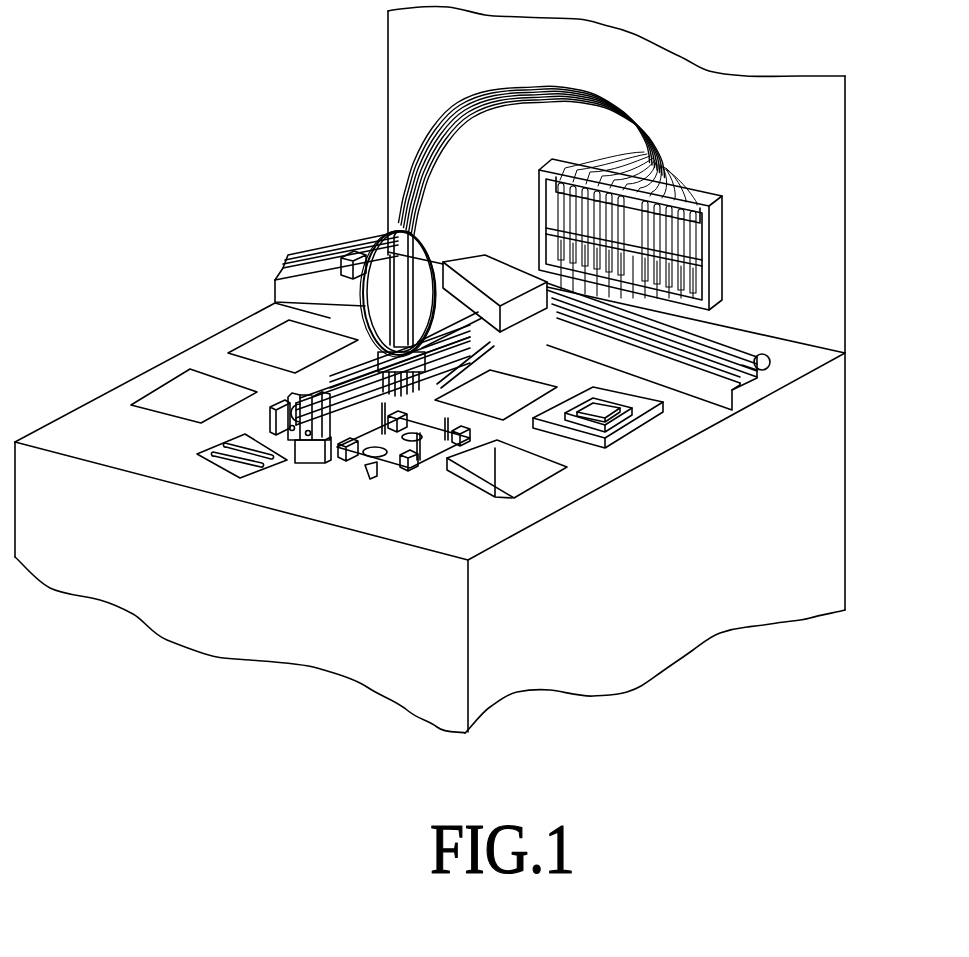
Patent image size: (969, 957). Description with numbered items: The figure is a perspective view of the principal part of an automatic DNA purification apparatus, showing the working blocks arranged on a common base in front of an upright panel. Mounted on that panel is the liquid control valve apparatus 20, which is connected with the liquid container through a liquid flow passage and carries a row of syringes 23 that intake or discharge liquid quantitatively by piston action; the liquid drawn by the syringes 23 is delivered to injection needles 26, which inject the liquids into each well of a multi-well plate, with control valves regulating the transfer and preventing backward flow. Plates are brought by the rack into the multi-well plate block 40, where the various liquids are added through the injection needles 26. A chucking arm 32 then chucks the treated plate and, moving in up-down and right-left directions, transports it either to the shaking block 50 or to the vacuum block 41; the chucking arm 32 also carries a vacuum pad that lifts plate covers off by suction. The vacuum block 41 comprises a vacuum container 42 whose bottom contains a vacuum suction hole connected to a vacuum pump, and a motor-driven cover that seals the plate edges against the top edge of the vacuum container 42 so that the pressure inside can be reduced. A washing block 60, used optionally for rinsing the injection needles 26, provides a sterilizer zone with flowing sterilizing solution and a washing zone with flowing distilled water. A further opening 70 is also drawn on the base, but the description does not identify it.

The liquid control valve apparatus 20 is at (724, 220).
The syringes 23 is at (692, 241).
The injection needles 26 is at (317, 388).
The chucking arm 32 is at (307, 458).
The multi-well plate block 40 is at (168, 392).
The vacuum block 41 is at (612, 415).
The vacuum container 42 is at (652, 413).
The shaking block 50 is at (408, 457).
The washing block 60 is at (224, 444).
The recess 70 is at (537, 478).